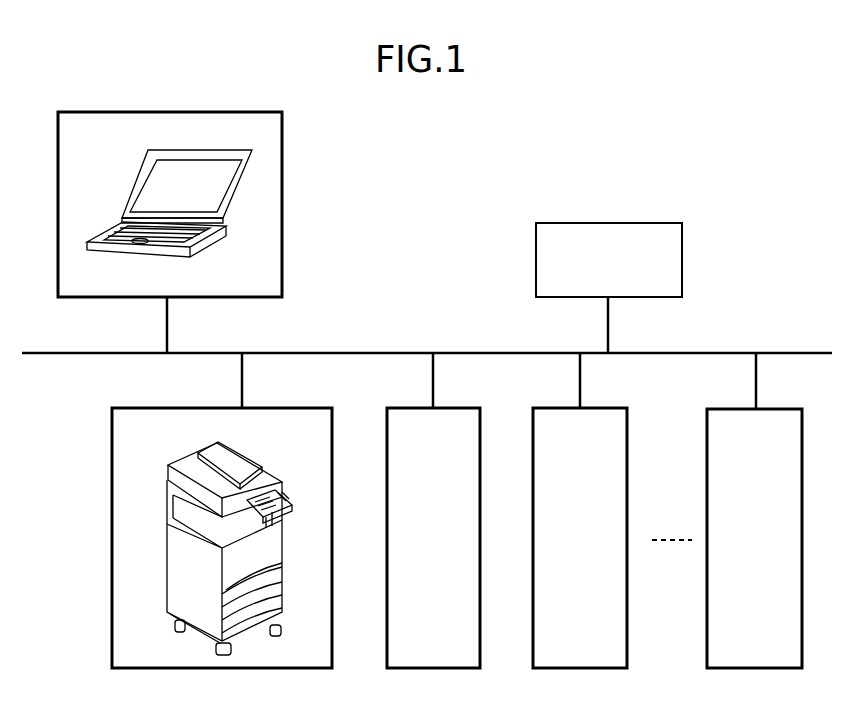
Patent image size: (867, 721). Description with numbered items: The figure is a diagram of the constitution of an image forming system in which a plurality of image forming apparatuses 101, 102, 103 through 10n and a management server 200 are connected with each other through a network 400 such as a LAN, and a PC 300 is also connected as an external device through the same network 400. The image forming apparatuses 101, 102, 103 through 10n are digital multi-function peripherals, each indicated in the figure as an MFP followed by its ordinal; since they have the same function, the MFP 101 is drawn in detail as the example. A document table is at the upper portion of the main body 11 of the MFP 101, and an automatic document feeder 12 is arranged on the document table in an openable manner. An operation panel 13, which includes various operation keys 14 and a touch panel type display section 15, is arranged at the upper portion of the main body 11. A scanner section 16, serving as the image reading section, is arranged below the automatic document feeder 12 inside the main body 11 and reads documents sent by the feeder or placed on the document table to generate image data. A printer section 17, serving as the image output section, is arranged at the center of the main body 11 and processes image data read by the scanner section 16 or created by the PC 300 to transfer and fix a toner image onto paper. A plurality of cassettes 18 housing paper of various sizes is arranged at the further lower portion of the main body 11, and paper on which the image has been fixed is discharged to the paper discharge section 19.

The management server 200 is at (283, 206).
The PC 300 is at (600, 223).
The network 400 is at (367, 352).
The image forming apparatus 101 is at (284, 407).
The image forming apparatus 102 is at (463, 407).
The image forming apparatus 103 is at (607, 407).
The image forming apparatus 10n is at (773, 408).
The main body 11 is at (166, 570).
The automatic document feeder 12 is at (190, 466).
The operation panel 13 is at (283, 484).
The operation keys 14 is at (292, 507).
The display section 15 is at (278, 516).
The scanner section 16 is at (193, 499).
The printer section 17 is at (272, 555).
The cassettes 18 is at (272, 593).
The paper discharge section 19 is at (202, 528).